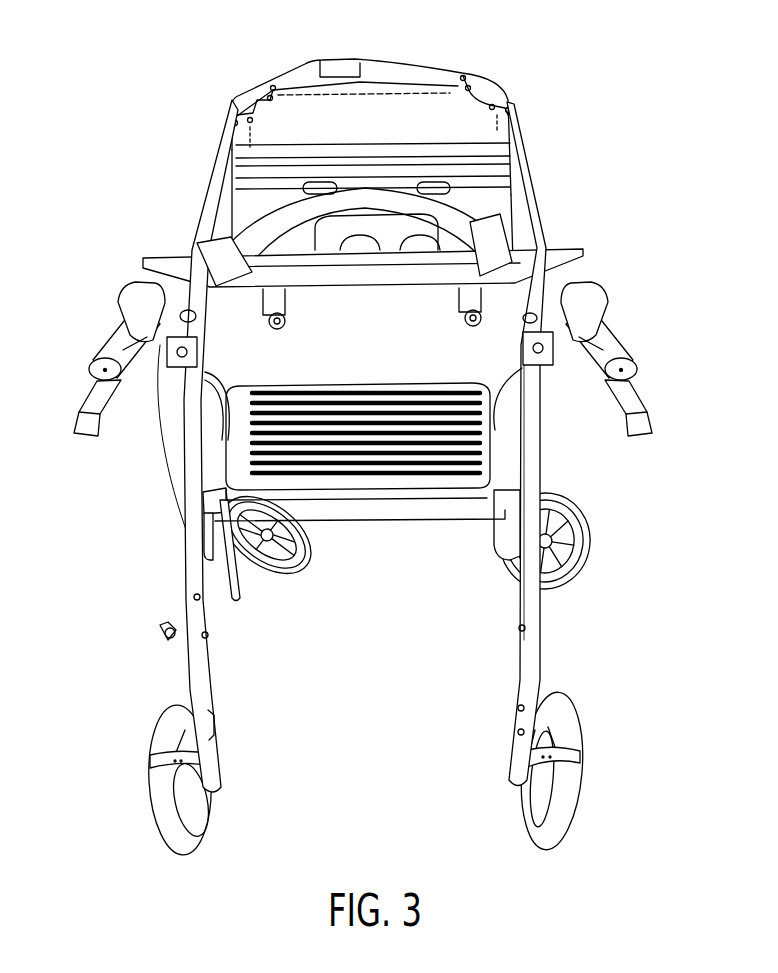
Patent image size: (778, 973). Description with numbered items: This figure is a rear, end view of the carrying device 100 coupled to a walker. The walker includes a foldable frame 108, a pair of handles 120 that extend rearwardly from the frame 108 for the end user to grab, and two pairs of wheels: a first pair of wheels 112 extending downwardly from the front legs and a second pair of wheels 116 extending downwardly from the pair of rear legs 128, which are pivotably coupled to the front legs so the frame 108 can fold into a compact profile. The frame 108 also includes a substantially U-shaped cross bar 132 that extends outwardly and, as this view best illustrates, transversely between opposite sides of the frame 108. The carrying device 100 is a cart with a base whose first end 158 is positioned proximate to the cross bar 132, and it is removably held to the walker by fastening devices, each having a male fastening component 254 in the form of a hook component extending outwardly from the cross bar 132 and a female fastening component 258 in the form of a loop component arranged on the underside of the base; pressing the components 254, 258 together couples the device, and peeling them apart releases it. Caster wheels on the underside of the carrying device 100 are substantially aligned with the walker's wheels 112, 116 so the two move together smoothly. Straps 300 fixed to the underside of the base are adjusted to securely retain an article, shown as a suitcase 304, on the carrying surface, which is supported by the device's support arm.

The carrying device 100 is at (379, 431).
The frame 108 is at (149, 637).
The first pair of wheels 112 is at (296, 592).
The second pair of wheels 116 is at (231, 802).
The handles 120 is at (110, 343).
The rear legs 128 is at (195, 683).
The cross bar 132 is at (432, 212).
The first end 158 is at (583, 250).
The male fastening component 254 is at (222, 258).
The female fastening component 258 is at (203, 250).
The straps 300 is at (330, 77).
The suitcase 304 is at (393, 112).